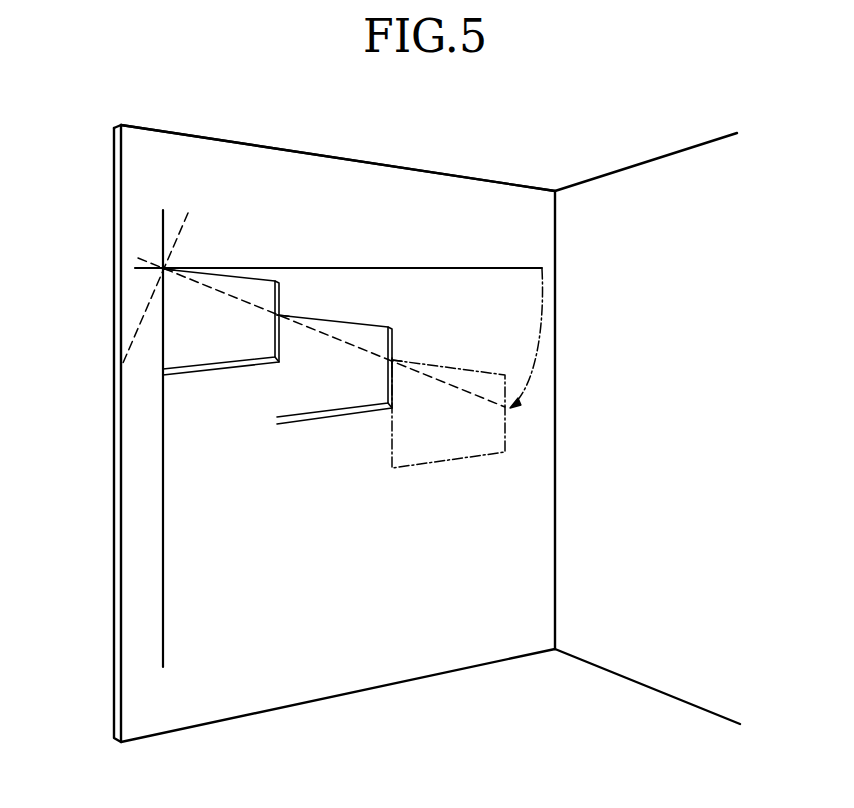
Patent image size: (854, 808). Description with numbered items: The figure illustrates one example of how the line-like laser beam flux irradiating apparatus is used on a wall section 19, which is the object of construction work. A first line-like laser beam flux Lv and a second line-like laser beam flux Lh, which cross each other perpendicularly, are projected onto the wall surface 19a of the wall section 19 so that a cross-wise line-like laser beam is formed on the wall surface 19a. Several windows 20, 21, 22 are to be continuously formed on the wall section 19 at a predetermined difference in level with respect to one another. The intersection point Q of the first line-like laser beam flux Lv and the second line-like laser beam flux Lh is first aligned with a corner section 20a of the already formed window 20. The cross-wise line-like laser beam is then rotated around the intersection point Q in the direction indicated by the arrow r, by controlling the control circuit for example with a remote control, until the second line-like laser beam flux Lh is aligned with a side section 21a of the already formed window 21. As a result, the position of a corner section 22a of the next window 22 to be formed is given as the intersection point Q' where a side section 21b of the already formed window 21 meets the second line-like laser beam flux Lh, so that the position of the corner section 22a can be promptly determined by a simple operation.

The wall section 19 is at (488, 205).
The wall surface 19a is at (328, 176).
The window 20 is at (252, 279).
The corner section 20a is at (166, 273).
The window 21 is at (327, 411).
The side section 21a is at (279, 316).
The side section 21b is at (392, 362).
The window 22 is at (478, 456).
The corner section 22a is at (392, 362).
The intersection point Q is at (162, 266).
The second line-like laser beam flux Lh is at (364, 268).
The first line-like laser beam flux Lv is at (163, 500).
The arrow indicating direction of rotation r is at (537, 324).